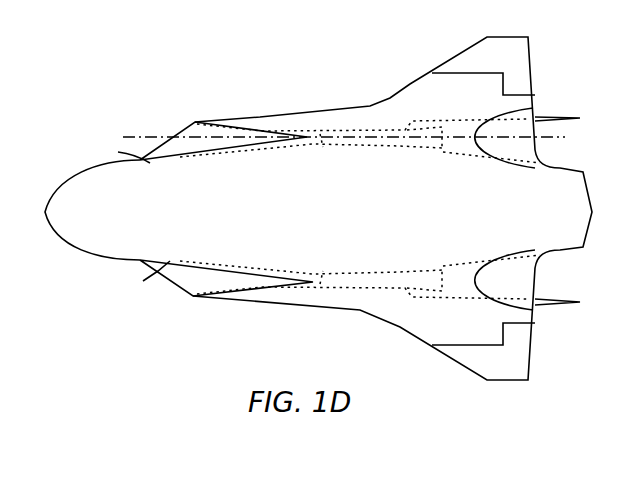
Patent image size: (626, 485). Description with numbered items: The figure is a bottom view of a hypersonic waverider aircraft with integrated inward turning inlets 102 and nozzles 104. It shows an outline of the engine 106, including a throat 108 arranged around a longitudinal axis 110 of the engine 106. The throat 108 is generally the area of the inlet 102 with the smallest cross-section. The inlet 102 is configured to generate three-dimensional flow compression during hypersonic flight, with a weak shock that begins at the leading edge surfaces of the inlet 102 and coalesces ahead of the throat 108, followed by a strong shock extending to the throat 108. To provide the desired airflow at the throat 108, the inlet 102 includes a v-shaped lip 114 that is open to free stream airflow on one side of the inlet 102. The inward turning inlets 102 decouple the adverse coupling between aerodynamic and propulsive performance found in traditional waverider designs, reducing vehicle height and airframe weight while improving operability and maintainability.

The inward turning inlet 102 is at (193, 130).
The nozzle 104 is at (535, 138).
The engine 106 is at (383, 130).
The throat 108 is at (348, 131).
The longitudinal axis 110 is at (127, 137).
The v-shaped lip 114 is at (123, 219).